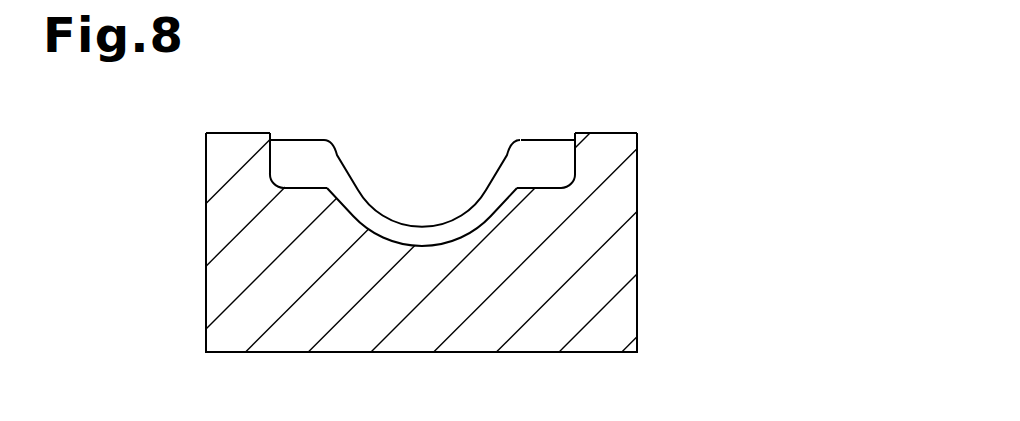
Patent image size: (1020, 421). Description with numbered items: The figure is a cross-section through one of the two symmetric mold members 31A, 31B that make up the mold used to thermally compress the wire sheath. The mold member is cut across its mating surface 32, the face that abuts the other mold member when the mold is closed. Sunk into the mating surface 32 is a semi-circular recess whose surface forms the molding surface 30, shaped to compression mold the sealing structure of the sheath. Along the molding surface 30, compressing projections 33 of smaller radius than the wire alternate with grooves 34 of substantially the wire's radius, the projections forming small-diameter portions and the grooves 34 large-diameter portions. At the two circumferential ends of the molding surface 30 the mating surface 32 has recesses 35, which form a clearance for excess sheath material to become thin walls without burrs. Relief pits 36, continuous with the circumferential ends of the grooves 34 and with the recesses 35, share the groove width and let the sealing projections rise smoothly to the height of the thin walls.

The molding surface 30 is at (422, 193).
The mold member 31A is at (637, 193).
The mold member 31B is at (505, 242).
The mating surface 32 is at (608, 133).
The compressing projection 33 is at (481, 196).
The groove 34 is at (390, 240).
The recess 35 is at (303, 138).
The relief pit 36 is at (298, 188).